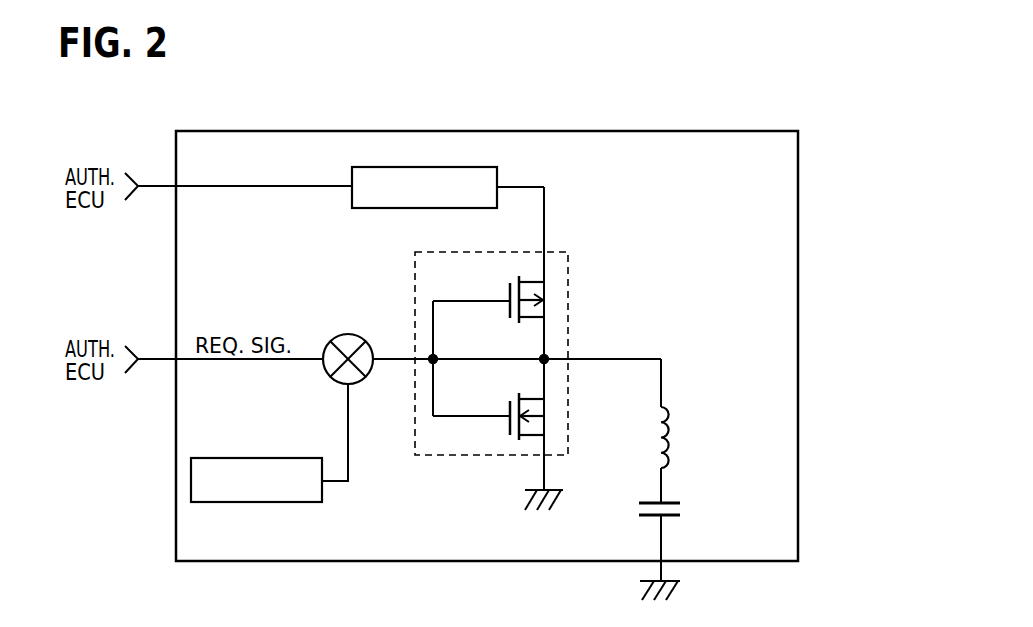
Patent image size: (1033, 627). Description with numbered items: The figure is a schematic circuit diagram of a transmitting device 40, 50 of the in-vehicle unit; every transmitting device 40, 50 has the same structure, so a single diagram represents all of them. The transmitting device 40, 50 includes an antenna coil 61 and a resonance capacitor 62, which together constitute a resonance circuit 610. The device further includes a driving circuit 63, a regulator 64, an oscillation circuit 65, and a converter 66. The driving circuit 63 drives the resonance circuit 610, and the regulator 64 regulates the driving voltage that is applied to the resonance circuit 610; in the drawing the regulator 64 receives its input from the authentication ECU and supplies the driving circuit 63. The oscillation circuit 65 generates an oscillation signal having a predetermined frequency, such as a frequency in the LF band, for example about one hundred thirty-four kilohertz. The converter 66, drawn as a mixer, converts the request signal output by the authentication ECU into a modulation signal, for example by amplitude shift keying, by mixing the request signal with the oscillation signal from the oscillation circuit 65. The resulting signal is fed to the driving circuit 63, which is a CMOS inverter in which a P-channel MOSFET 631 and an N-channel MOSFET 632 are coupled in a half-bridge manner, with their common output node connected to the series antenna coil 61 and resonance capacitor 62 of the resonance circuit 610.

The transmitting device 40 is at (487, 308).
The transmitting device 50 is at (677, 130).
The regulator 64 is at (412, 167).
The driving circuit 63 is at (526, 335).
The P-channel MOSFET 631 is at (532, 283).
The N-channel MOSFET 632 is at (543, 412).
The converter 66 is at (352, 335).
The oscillation circuit 65 is at (295, 502).
The antenna coil 61 is at (668, 423).
The resonance capacitor 62 is at (683, 491).
The resonance circuit 610 is at (713, 437).